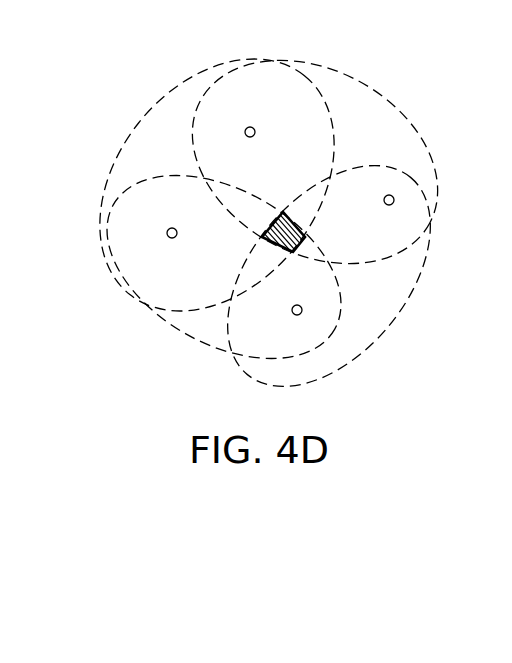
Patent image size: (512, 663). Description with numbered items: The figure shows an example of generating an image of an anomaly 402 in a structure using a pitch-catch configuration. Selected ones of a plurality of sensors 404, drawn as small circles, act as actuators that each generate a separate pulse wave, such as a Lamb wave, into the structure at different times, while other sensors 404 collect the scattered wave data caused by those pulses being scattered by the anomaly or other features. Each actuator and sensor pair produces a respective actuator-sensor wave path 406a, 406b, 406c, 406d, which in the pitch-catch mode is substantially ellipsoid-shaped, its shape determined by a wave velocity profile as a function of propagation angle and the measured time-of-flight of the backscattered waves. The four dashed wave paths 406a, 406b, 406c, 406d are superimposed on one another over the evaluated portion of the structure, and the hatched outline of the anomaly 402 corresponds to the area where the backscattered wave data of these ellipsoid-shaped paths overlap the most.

The anomaly 402 is at (313, 246).
The sensors 404 is at (250, 127).
The actuator-sensor wave path 406a is at (153, 108).
The actuator-sensor wave path 406b is at (357, 79).
The actuator-sensor wave path 406c is at (178, 326).
The actuator-sensor wave path 406d is at (408, 310).